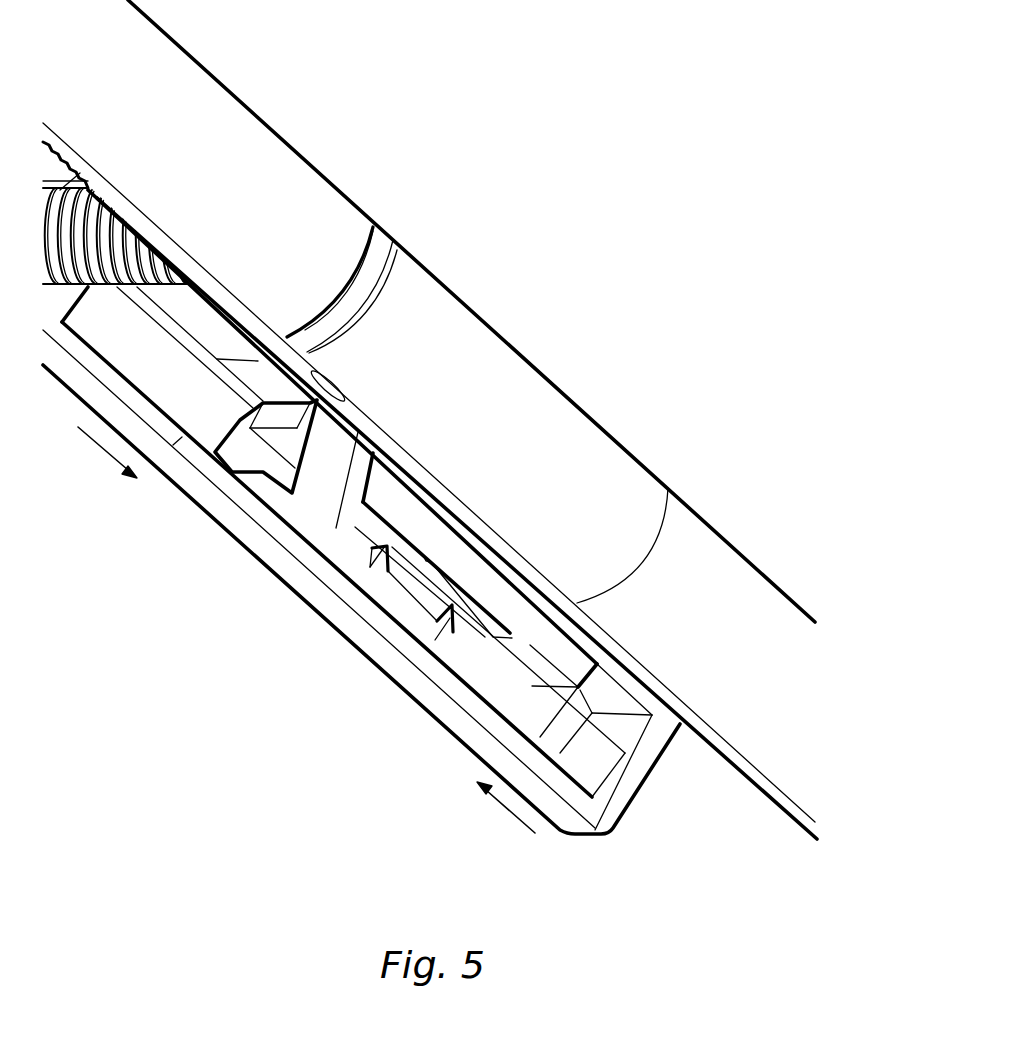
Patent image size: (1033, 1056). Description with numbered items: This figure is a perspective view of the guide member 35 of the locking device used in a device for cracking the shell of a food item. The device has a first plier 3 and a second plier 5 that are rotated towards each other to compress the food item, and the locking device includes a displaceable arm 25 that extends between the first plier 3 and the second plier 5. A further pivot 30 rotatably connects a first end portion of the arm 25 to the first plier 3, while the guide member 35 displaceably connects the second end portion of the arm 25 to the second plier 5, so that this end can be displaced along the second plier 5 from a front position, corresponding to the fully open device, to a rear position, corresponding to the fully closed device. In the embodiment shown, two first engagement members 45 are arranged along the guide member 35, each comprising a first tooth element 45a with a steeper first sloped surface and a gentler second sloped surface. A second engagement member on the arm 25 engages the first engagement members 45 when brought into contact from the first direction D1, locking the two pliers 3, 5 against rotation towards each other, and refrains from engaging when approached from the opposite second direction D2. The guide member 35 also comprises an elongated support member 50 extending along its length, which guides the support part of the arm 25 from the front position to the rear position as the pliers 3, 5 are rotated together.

The first plier 3 is at (613, 473).
The second plier 5 is at (478, 742).
The displaceable arm 25 is at (320, 490).
The further pivot 30 is at (336, 388).
The guide member 35 is at (447, 677).
The first engagement member 45 is at (383, 570).
The first tooth element 45a is at (450, 630).
The elongated support member 50 is at (440, 567).
The first direction D1 is at (100, 447).
The second direction D2 is at (510, 813).